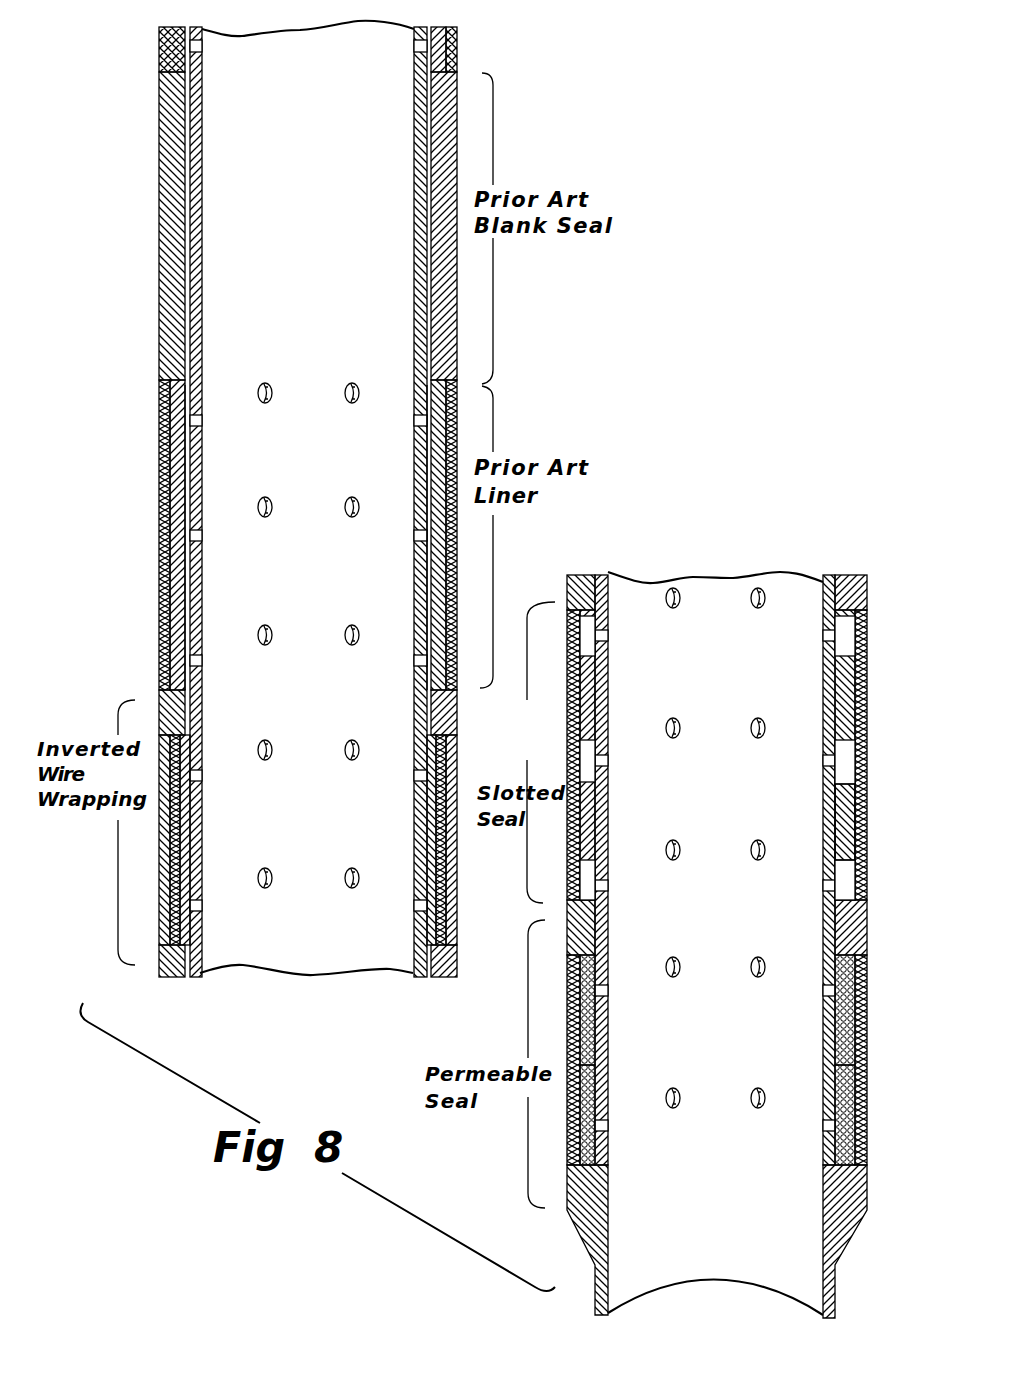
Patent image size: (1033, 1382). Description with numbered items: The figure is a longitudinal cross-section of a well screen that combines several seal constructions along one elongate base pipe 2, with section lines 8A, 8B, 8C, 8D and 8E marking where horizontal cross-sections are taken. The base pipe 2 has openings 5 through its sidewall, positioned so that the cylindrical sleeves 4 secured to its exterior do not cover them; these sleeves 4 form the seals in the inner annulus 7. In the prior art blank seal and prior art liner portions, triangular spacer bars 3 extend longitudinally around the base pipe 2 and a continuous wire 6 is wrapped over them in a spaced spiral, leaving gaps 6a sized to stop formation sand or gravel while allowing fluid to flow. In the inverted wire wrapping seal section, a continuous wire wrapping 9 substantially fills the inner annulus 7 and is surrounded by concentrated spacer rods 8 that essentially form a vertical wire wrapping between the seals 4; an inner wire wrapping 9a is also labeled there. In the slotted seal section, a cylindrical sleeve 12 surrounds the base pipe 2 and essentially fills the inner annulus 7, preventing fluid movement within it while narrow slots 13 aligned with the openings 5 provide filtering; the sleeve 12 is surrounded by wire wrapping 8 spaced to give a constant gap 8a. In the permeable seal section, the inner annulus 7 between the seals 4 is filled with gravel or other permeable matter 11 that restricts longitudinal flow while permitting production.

The base pipe 2 is at (416, 115).
The spacer bars 3 is at (432, 642).
The cylindrical sleeves 4 is at (450, 112).
The openings 5 is at (414, 530).
The wire wrapping 6 is at (160, 435).
The gaps 6a is at (170, 470).
The inner annulus 7 is at (416, 60).
The spacer rods 8 is at (448, 778).
The constant gap 8a is at (866, 795).
The wire wrapping 9 is at (428, 812).
The inner wire wrapping 9a is at (430, 868).
The permeable matter 11 is at (855, 972).
The cylindrical sleeve 12 is at (608, 668).
The slots 13 is at (590, 766).
The section line 8A is at (125, 260).
The section line 8B is at (125, 530).
The section line 8C is at (127, 840).
The section line 8D is at (545, 750).
The section line 8E is at (545, 1056).